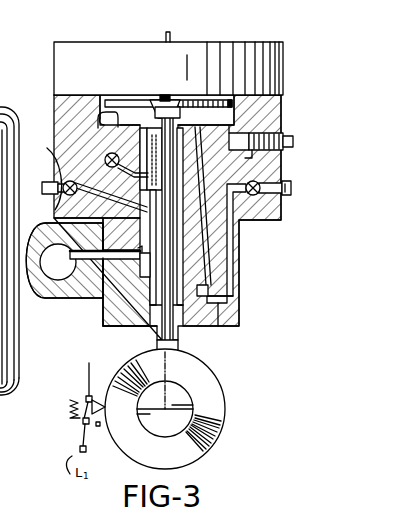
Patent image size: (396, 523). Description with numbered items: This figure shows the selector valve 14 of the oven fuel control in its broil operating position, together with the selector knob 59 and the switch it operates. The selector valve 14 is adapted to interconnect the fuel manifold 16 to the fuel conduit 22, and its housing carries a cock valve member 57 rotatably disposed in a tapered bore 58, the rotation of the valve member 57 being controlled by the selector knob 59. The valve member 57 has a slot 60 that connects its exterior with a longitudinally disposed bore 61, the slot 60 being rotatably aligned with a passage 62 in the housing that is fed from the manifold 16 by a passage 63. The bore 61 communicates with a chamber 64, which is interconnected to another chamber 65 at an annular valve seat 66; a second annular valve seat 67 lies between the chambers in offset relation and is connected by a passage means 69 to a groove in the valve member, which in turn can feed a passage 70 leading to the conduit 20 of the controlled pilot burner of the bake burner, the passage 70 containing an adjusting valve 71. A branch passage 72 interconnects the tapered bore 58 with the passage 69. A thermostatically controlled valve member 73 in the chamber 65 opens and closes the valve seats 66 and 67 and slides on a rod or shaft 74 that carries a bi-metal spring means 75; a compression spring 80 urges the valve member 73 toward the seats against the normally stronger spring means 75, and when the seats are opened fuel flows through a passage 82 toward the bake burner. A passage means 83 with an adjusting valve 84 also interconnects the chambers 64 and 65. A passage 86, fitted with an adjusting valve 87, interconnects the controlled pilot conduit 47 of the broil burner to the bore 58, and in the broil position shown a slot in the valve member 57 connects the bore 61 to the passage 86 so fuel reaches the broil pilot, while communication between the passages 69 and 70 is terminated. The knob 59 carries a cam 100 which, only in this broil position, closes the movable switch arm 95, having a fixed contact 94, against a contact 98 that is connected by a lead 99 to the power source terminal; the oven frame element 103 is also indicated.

The oven frame 103 is at (0, 12).
The selector valve 14 is at (268, 308).
The compression spring 80 is at (179, 96).
The thermostatically controlled valve member 73 is at (124, 101).
The chamber 64 is at (232, 108).
The bi-metal spring means 75 is at (157, 100).
The chamber 65 is at (100, 97).
The annular valve seat 66 is at (98, 121).
The annular valve seat 67 is at (214, 127).
The fuel conduit 22 is at (289, 134).
The passage 82 is at (258, 151).
The adjusting valve 71 is at (251, 195).
The branch passage 72 is at (233, 268).
The conduit 20 is at (287, 194).
The passage means 69 is at (209, 228).
The passage 70 is at (221, 304).
The longitudinally disposed bore 61 is at (175, 175).
The rod or shaft 74 is at (177, 152).
The adjusting valve 84 is at (105, 157).
The passage means 83 is at (118, 172).
The controlled pilot conduit 47 is at (50, 182).
The passage 86 is at (134, 152).
The adjusting valve 87 is at (43, 174).
The fuel manifold 16 is at (48, 299).
The passage 63 is at (62, 243).
The passage 62 is at (118, 272).
The slot 60 is at (141, 241).
The tapered bore 58 is at (110, 300).
The cock valve member 57 is at (131, 318).
The selector knob 59 is at (222, 419).
The cam 100 is at (100, 386).
The fixed contact 94 is at (88, 395).
The contact 98 is at (70, 417).
The lead 99 is at (82, 436).
The movable switch arm 95 is at (95, 426).